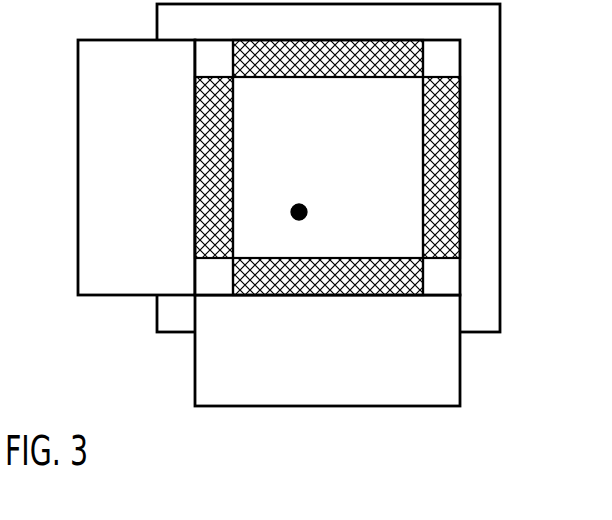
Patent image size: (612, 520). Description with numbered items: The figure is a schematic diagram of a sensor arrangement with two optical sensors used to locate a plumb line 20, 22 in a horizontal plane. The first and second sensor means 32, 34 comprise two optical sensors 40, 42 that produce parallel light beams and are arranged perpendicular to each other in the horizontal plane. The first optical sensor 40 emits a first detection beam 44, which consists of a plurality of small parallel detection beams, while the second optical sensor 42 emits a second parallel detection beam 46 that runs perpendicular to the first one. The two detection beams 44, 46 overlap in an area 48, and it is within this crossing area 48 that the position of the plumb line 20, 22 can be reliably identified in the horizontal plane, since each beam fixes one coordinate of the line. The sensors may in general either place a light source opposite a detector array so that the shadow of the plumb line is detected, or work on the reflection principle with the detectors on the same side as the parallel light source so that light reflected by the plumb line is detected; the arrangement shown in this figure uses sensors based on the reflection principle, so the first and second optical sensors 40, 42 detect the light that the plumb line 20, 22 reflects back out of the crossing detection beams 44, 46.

The plumb line 20 is at (436, 198).
The plumb line 22 is at (306, 208).
The first sensor means 32 is at (257, 190).
The second sensor means 34 is at (143, 338).
The first optical sensor 40 is at (100, 229).
The second optical sensor 42 is at (335, 392).
The first detection beam 44 is at (292, 167).
The second parallel detection beam 46 is at (410, 275).
The area 48 is at (405, 232).